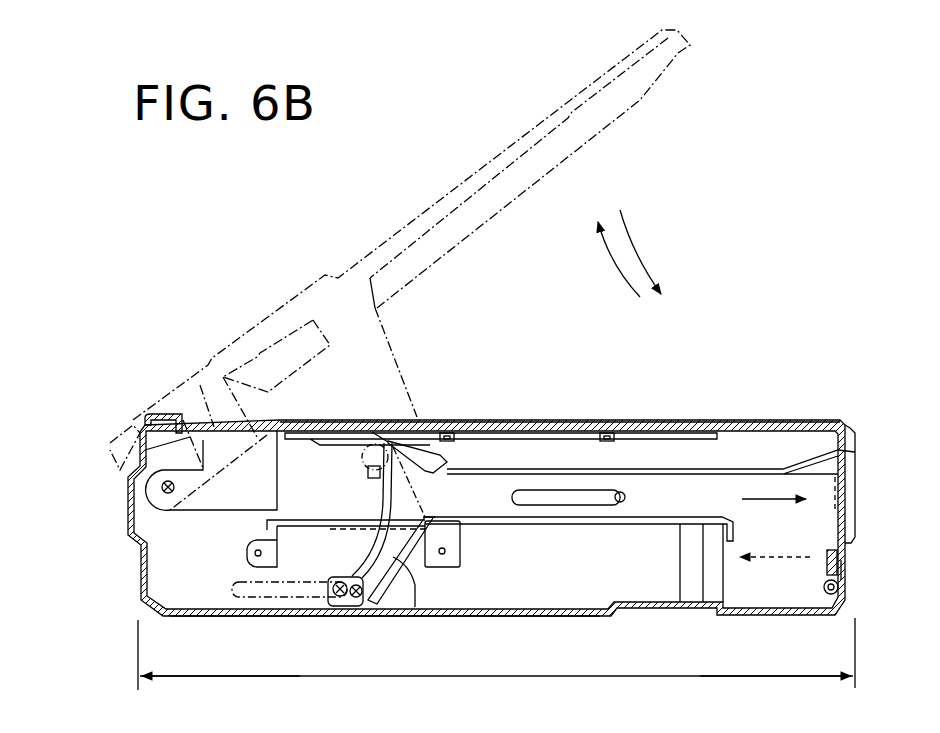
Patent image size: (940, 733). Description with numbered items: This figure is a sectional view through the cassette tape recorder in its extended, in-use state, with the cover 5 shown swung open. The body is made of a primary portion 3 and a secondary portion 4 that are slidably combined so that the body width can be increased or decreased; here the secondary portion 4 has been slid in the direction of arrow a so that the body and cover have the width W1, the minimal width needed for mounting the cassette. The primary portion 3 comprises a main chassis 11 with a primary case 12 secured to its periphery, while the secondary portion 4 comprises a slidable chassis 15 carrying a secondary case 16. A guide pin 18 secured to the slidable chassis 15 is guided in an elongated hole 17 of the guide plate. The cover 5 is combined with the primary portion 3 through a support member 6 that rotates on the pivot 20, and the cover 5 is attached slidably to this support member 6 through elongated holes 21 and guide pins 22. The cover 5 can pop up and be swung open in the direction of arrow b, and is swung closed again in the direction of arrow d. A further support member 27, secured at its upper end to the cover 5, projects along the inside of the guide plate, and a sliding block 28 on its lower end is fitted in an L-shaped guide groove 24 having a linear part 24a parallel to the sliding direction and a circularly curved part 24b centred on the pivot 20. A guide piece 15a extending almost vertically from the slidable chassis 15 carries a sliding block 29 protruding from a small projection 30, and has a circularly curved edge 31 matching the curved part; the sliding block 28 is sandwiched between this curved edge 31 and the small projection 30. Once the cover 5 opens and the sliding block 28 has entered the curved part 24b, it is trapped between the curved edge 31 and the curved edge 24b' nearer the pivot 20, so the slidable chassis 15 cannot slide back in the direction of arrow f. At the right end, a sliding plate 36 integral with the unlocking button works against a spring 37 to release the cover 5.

The primary portion of the body 3 is at (563, 626).
The secondary portion of the body 4 is at (867, 499).
The cover 5 is at (580, 97).
The support member 6 is at (208, 427).
The main chassis 11 is at (658, 524).
The primary case 12 is at (487, 618).
The slidable chassis 15 is at (723, 480).
The guide piece 15a is at (398, 590).
The secondary case 16 is at (847, 571).
The elongated hole 17 is at (543, 505).
The guide pin 18 is at (624, 494).
The pivot 20 is at (163, 486).
The elongated hole 21 is at (340, 431).
The guide pin 22 is at (450, 432).
The guide groove 24 is at (362, 496).
The linear part of the guide groove 24a is at (263, 595).
The curved part of the guide groove 24b is at (438, 476).
The curved edge of the curved part 24b' is at (351, 564).
The support member 27 is at (390, 363).
The sliding block 28 is at (372, 440).
The sliding block 29 is at (350, 594).
The small projection 30 is at (333, 585).
The curved edge 31 is at (370, 474).
The sliding plate 36 is at (838, 553).
The spring 37 is at (838, 590).
The arrow a is at (768, 497).
The arrow b is at (627, 267).
The arrow d is at (647, 257).
The arrow f is at (772, 558).
The width W1 is at (523, 676).